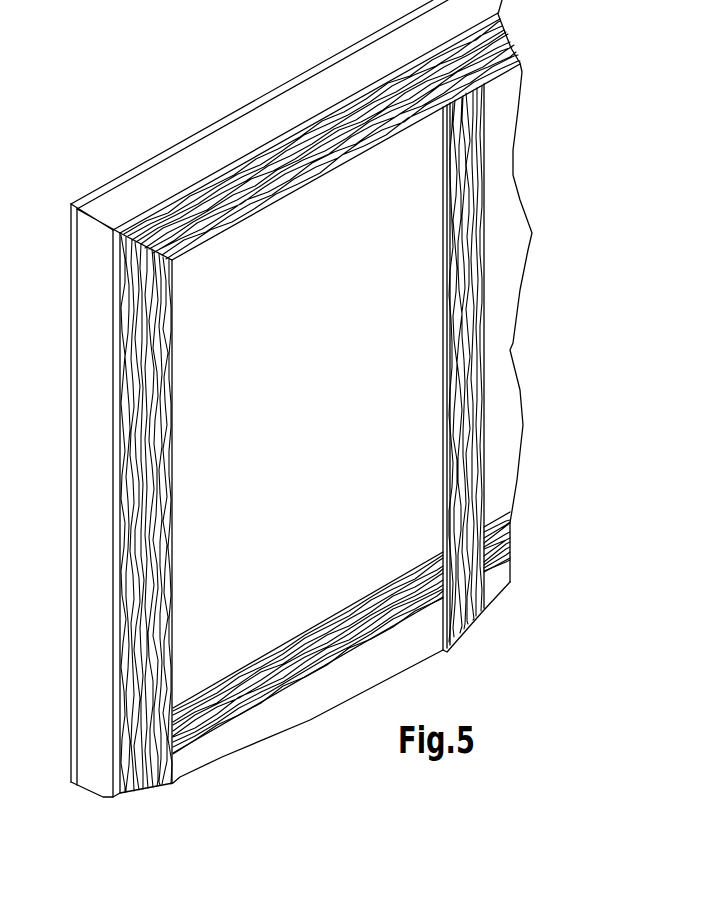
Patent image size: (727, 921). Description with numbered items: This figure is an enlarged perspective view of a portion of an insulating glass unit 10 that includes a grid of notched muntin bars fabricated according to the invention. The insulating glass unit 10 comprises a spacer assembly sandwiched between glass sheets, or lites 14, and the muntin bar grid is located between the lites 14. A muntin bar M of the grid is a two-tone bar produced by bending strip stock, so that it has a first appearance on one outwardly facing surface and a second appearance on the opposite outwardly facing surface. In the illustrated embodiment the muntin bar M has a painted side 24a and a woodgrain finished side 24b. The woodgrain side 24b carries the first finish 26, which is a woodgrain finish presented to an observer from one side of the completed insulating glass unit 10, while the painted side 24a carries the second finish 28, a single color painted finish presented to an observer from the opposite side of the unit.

The insulating glass unit 10 is at (205, 85).
The lites 14 is at (220, 428).
The painted side 24a is at (442, 385).
The woodgrain finished side 24b is at (468, 383).
The first finish 26 is at (467, 307).
The second finish 28 is at (442, 260).
The muntin bar M is at (465, 330).